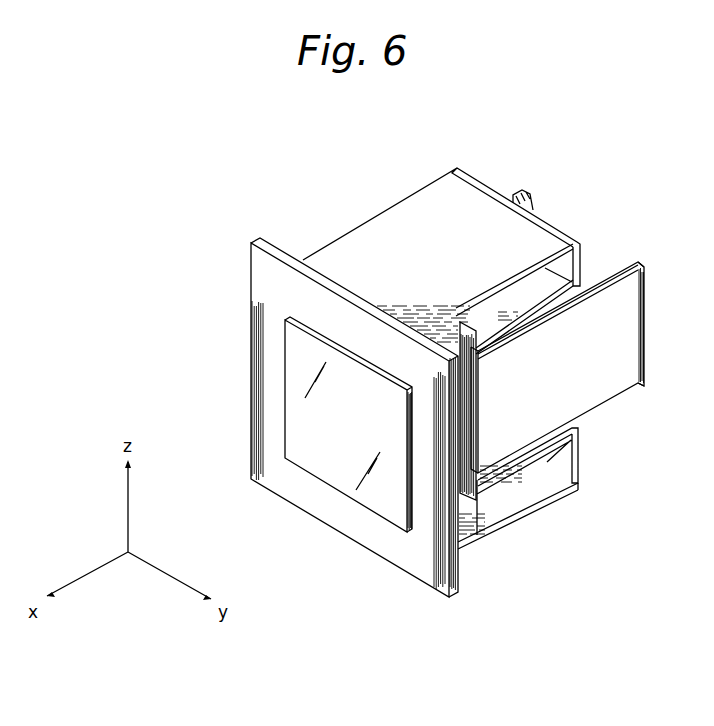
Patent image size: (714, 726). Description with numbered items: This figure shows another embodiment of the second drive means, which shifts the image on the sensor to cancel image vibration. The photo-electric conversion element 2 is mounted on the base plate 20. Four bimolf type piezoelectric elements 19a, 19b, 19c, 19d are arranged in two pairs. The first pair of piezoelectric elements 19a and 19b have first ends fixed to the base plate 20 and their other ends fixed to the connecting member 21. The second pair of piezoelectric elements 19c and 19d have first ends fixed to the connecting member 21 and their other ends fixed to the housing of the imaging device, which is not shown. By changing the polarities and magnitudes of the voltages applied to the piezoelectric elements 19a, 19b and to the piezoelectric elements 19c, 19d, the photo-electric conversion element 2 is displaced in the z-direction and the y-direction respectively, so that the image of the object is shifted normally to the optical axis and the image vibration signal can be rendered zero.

The photo-electric conversion element 2 is at (367, 503).
The bimolf type piezoelectric element 19a is at (396, 200).
The bimolf type piezoelectric element 19b is at (517, 515).
The bimolf type piezoelectric element 19c is at (513, 192).
The bimolf type piezoelectric element 19d is at (620, 394).
The base plate 20 is at (427, 585).
The connecting member 21 is at (580, 454).